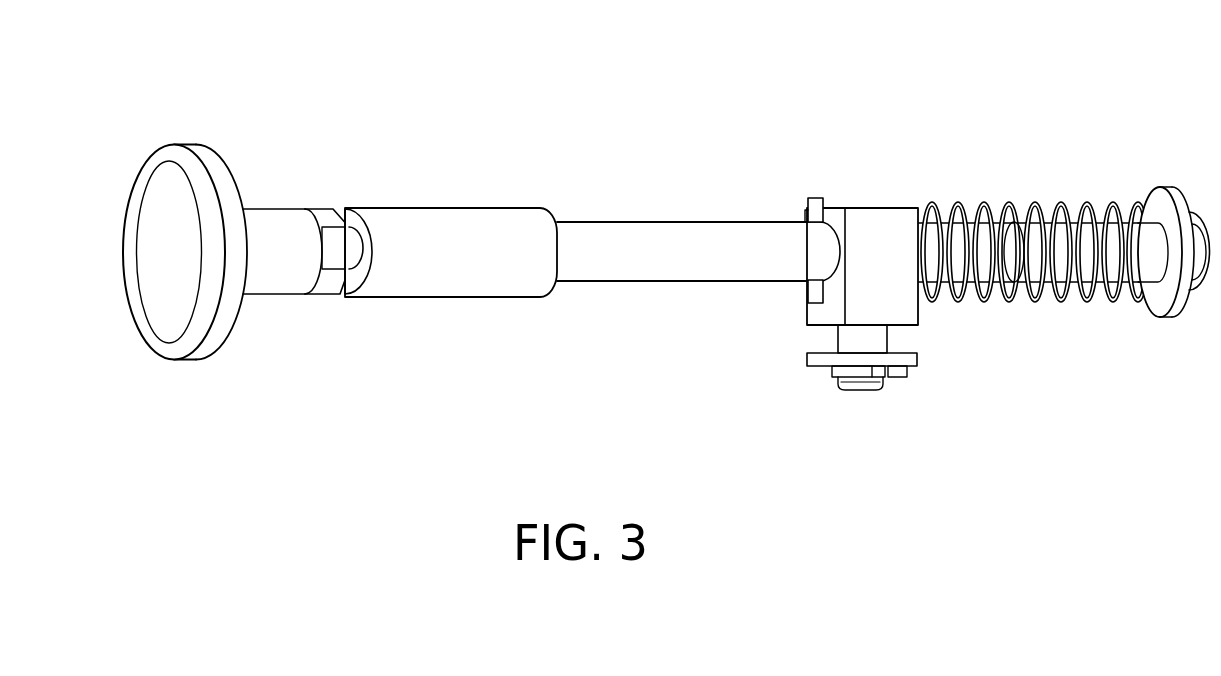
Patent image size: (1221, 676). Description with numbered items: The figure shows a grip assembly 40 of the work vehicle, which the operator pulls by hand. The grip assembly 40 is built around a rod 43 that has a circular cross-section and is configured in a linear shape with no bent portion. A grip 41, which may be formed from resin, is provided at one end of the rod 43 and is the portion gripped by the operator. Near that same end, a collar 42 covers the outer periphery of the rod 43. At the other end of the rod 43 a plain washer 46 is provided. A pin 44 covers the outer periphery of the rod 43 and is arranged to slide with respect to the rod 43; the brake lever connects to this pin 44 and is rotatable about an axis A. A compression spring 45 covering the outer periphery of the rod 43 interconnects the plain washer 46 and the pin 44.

The grip assembly 40 is at (955, 60).
The grip 41 is at (168, 177).
The collar 42 is at (505, 222).
The rod 43 is at (678, 228).
The pin 44 is at (857, 218).
The compression spring 45 is at (1043, 300).
The plain washer 46 is at (1157, 192).
The axis A is at (855, 393).